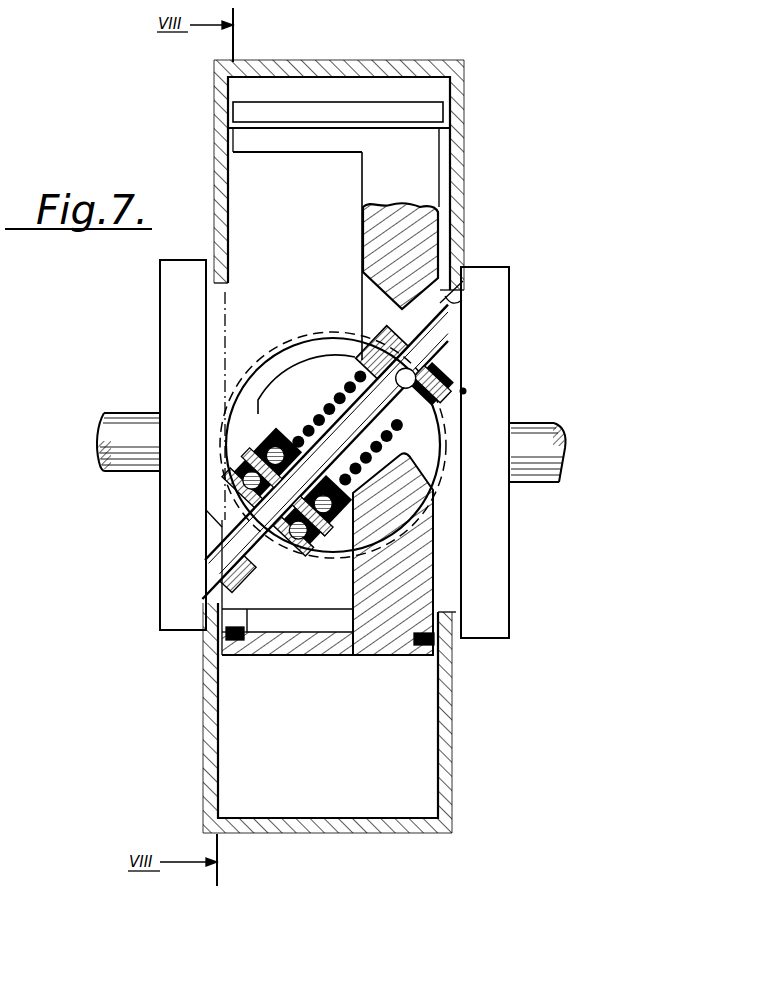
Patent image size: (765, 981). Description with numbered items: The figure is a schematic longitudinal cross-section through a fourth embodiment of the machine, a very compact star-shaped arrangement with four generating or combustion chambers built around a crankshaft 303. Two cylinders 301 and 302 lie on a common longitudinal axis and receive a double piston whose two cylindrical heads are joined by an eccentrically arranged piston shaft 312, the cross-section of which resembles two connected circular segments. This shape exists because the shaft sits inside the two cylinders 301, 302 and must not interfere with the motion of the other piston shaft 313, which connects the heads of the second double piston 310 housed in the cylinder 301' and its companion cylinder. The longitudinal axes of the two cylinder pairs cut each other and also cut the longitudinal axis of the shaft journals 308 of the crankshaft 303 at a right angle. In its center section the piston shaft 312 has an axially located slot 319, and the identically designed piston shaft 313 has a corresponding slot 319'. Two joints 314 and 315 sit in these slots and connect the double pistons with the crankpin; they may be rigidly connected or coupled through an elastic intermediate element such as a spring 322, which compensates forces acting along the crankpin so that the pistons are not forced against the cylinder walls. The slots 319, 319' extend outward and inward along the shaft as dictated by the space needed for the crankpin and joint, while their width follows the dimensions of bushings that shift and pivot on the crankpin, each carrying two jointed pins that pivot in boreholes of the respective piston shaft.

The cylinder 301 is at (339, 195).
The cylinder 301' is at (333, 422).
The cylinder 302 is at (425, 806).
The crankshaft 303 is at (528, 497).
The shaft journals 308 is at (553, 423).
The double piston 310 is at (300, 348).
The piston shaft 312 is at (430, 198).
The piston shaft 313 is at (258, 432).
The joint 314 is at (464, 391).
The joint 315 is at (237, 498).
The slot 319 is at (385, 440).
The slot 319' is at (250, 574).
The spring 322 is at (443, 458).